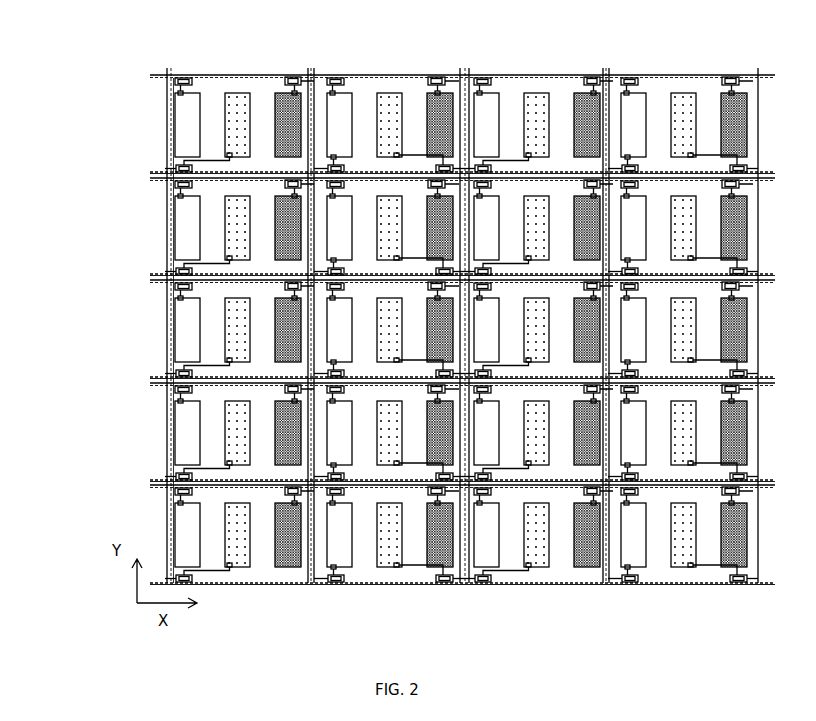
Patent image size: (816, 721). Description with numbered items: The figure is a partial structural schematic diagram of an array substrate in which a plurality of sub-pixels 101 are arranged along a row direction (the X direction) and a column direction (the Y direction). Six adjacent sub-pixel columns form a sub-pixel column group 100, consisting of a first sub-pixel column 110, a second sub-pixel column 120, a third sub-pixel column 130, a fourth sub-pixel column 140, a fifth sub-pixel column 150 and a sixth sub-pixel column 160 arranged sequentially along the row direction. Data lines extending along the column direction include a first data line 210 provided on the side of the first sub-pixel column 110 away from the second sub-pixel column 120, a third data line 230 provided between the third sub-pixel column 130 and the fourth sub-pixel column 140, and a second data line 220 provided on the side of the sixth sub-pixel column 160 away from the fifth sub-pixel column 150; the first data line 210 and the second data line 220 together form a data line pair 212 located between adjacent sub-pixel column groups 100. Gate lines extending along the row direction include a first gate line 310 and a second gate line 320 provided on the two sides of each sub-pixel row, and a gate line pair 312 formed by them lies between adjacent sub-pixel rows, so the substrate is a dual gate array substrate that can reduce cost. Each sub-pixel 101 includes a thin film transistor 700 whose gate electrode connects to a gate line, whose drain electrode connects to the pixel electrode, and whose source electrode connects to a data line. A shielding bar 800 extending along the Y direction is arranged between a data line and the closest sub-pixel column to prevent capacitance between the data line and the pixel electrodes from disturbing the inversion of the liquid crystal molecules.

The sub-pixel column group 100 is at (448, 589).
The sub-pixel 101 is at (183, 353).
The first sub-pixel column 110 is at (188, 105).
The second sub-pixel column 120 is at (240, 105).
The third sub-pixel column 130 is at (278, 90).
The fourth sub-pixel column 140 is at (343, 102).
The fifth sub-pixel column 150 is at (382, 102).
The sixth sub-pixel column 160 is at (440, 117).
The first data line 210 is at (165, 438).
The data line pair 212 is at (513, 628).
The second data line 220 is at (458, 585).
The third data line 230 is at (608, 560).
The first gate line 310 is at (152, 76).
The gate line pair 312 is at (96, 160).
The second gate line 320 is at (155, 172).
The thin film transistor 700 is at (170, 88).
The shielding bar 800 is at (173, 133).